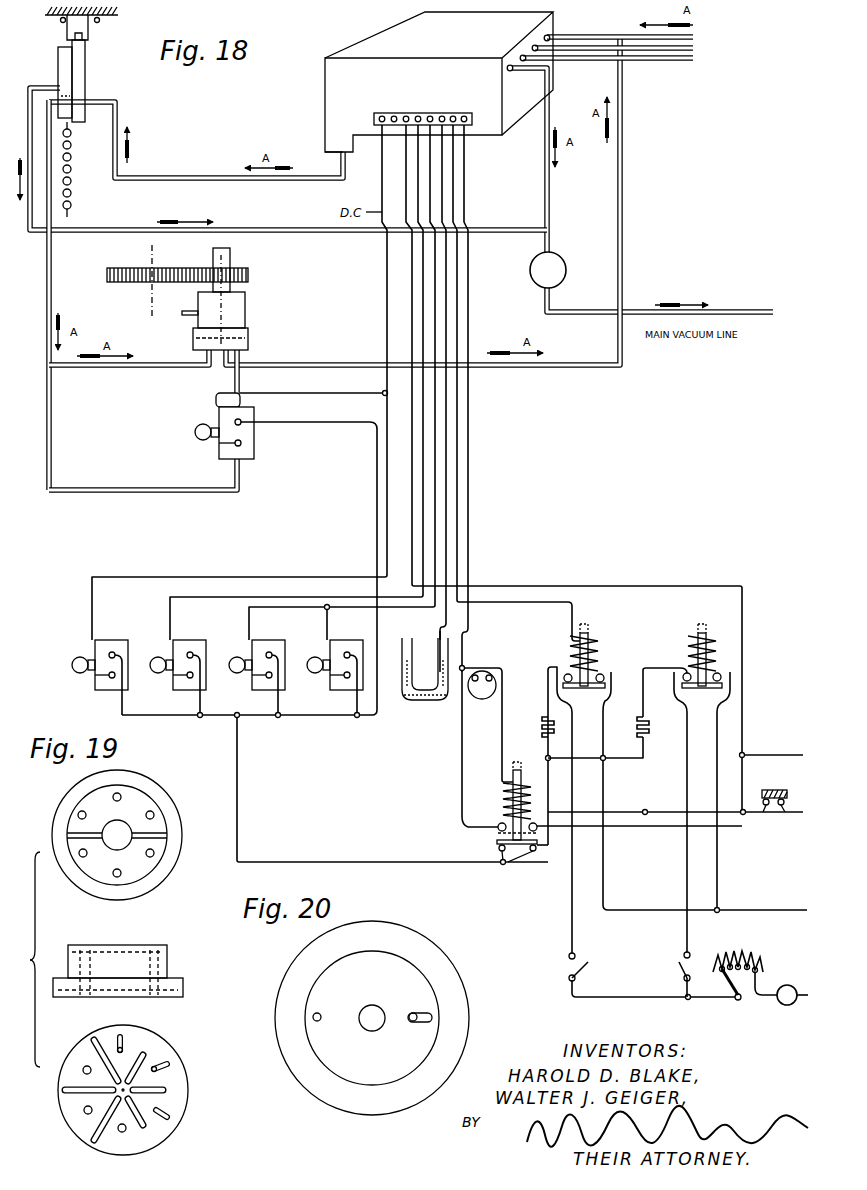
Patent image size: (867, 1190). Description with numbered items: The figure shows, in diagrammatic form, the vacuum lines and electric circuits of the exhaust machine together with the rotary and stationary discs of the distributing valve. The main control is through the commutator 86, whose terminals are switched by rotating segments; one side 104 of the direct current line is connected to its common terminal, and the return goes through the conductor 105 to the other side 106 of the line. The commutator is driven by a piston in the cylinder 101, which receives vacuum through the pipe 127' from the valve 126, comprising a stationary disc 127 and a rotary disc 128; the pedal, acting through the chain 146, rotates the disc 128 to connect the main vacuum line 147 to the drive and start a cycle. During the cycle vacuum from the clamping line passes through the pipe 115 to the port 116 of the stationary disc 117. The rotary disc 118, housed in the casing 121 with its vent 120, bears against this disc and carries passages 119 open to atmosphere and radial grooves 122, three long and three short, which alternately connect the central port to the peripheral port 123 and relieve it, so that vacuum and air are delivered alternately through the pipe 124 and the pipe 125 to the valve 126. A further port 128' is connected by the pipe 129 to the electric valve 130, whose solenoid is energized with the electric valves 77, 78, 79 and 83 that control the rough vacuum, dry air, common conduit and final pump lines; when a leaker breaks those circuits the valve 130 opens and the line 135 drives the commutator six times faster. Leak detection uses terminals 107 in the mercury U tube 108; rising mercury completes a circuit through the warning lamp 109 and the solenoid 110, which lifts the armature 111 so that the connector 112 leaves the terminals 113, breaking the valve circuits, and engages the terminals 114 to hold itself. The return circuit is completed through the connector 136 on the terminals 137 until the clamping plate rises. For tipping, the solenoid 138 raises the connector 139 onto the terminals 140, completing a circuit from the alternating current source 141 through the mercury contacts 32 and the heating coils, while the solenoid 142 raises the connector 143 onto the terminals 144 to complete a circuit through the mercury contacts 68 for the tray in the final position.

In FIG. 18, the valve 126 is at (81, 31).
In FIG. 18, the stationary disc 127 is at (98, 81).
In FIG. 18, the rotary disc 128 is at (40, 82).
In FIG. 18, the chain 146 is at (72, 176).
In FIG. 18, the pipe 127' is at (196, 141).
In FIG. 18, the commutator 86 is at (325, 88).
In FIG. 18, the cylinder 101 is at (328, 152).
In FIG. 18, the main vacuum line 147 is at (297, 234).
In FIG. 18, the pipe 115 is at (622, 214).
In FIG. 18, the pipe 125 is at (52, 295).
In FIG. 18, the casing 121 is at (199, 300).
In FIG. 18, the vent 120 is at (181, 326).
In FIG. 18, the disc 118 is at (249, 331).
In FIG. 19, the disc 118 is at (147, 786).
In FIG. 18, the stationary disc 117 is at (249, 344).
In FIG. 20, the stationary disc 117 is at (432, 952).
In FIG. 18, the pipe 124 is at (148, 368).
In FIG. 18, the pipe 129 is at (243, 386).
In FIG. 18, the electric valve 130 is at (255, 451).
In FIG. 18, the line 135 is at (157, 493).
In FIG. 18, the valve 77 is at (97, 689).
In FIG. 18, the valve 78 is at (177, 689).
In FIG. 18, the valve 79 is at (259, 689).
In FIG. 18, the valve 83 is at (337, 689).
In FIG. 18, the conductor 105 is at (237, 775).
In FIG. 18, the terminals 107 is at (441, 652).
In FIG. 18, the mercury U tube 108 is at (428, 701).
In FIG. 18, the warning lamp 109 is at (483, 700).
In FIG. 18, the armature 111 is at (522, 778).
In FIG. 18, the solenoid 110 is at (505, 800).
In FIG. 18, the terminals 114 is at (502, 823).
In FIG. 18, the connector 112 is at (497, 841).
In FIG. 18, the terminals 113 is at (514, 864).
In FIG. 18, the solenoid 138 is at (597, 651).
In FIG. 18, the terminals 140 is at (594, 672).
In FIG. 18, the connector 139 is at (591, 690).
In FIG. 18, the solenoid 142 is at (708, 641).
In FIG. 18, the terminals 144 is at (720, 676).
In FIG. 18, the connector 143 is at (702, 690).
In FIG. 18, the side of direct current line 104 is at (772, 744).
In FIG. 18, the connector 136 is at (780, 788).
In FIG. 18, the terminals 137 is at (768, 808).
In FIG. 18, the other side of direct current line 106 is at (790, 813).
In FIG. 18, the mercury contacts 32 is at (577, 956).
In FIG. 18, the mercury contacts 68 is at (684, 961).
In FIG. 18, the alternating current source 141 is at (709, 998).
In FIG. 19, the passages 119 is at (114, 795).
In FIG. 19, the radial grooves 122 is at (80, 1041).
In FIG. 20, the port 116 is at (376, 1010).
In FIG. 20, the peripheral port 123 is at (317, 1013).
In FIG. 20, the port 128' is at (411, 1034).